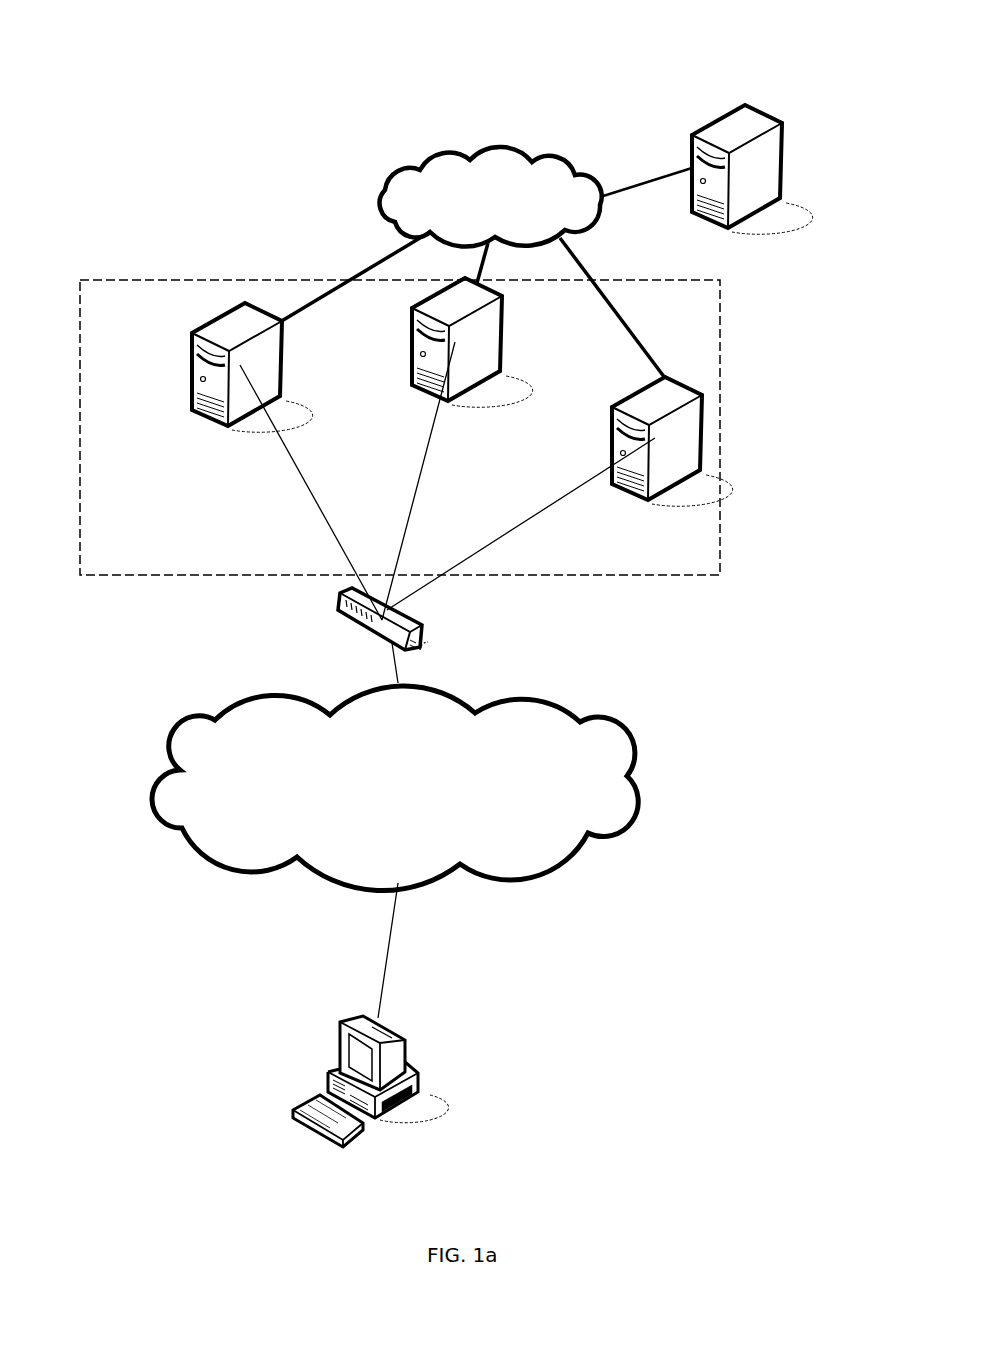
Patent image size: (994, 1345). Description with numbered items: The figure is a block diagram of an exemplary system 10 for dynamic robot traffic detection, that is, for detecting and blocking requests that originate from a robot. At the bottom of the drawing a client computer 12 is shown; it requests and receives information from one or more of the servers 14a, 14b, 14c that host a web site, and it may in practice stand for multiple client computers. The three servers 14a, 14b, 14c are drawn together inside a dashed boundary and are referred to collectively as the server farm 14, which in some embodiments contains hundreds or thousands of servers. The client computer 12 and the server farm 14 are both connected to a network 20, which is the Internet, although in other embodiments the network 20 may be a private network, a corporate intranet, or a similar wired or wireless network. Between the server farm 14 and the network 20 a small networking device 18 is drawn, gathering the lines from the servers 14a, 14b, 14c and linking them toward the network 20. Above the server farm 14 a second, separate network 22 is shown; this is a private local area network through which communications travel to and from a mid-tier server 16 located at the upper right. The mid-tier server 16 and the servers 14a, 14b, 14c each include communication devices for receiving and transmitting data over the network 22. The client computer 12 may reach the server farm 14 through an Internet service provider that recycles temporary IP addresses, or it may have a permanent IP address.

The system 10 is at (391, 41).
The client computer 12 is at (420, 1087).
The server farm 14 is at (725, 567).
The server 14a is at (232, 338).
The server 14b is at (415, 335).
The server 14c is at (682, 427).
The mid-tier server 16 is at (737, 123).
The router 18 is at (428, 640).
The network 20 is at (645, 777).
The network 22 is at (515, 162).